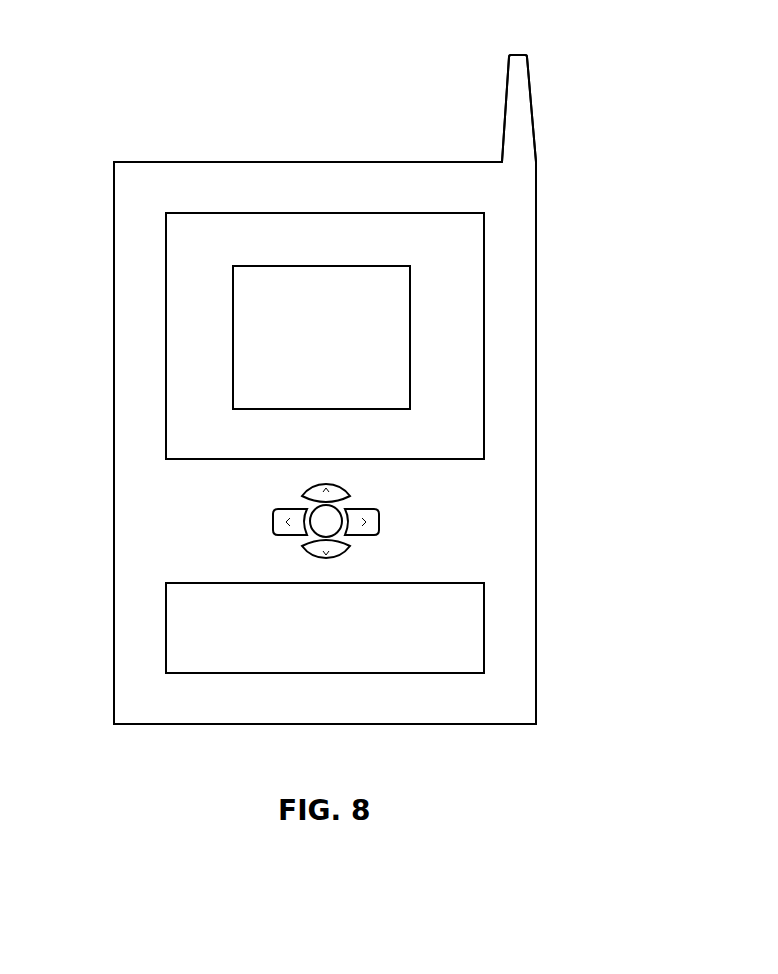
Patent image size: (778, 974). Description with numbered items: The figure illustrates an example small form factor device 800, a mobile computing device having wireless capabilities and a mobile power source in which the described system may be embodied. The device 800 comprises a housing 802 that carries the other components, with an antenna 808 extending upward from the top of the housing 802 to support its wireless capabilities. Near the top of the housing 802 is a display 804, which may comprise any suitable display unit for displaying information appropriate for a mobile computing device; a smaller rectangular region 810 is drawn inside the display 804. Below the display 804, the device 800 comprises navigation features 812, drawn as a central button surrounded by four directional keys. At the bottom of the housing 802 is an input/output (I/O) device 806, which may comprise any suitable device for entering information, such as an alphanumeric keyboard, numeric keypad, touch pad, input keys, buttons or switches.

The small form factor device 800 is at (131, 73).
The housing 802 is at (537, 443).
The display 804 is at (484, 232).
The input/output (I/O) device 806 is at (484, 618).
The antenna 808 is at (504, 100).
The display window 810 is at (412, 358).
The navigation features 812 is at (392, 512).